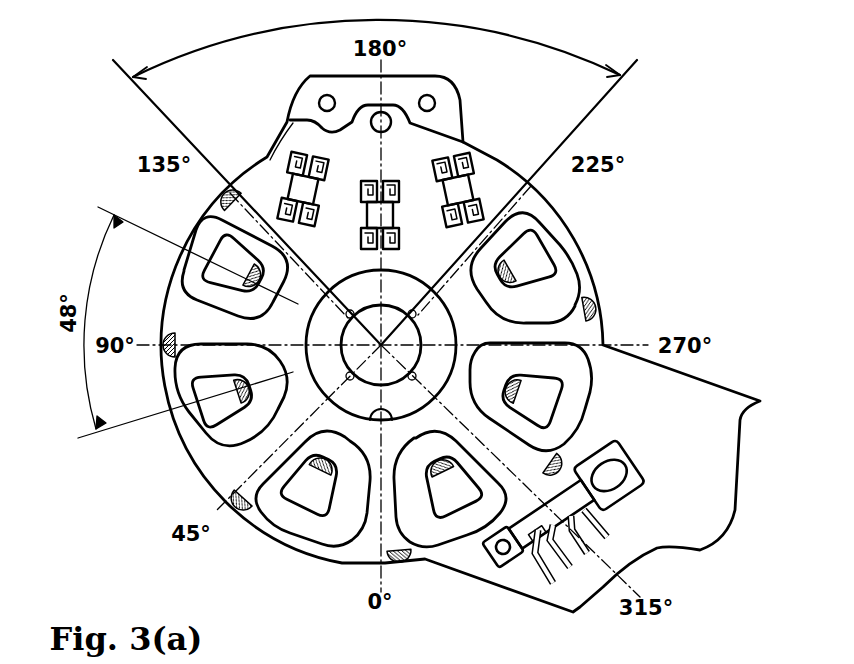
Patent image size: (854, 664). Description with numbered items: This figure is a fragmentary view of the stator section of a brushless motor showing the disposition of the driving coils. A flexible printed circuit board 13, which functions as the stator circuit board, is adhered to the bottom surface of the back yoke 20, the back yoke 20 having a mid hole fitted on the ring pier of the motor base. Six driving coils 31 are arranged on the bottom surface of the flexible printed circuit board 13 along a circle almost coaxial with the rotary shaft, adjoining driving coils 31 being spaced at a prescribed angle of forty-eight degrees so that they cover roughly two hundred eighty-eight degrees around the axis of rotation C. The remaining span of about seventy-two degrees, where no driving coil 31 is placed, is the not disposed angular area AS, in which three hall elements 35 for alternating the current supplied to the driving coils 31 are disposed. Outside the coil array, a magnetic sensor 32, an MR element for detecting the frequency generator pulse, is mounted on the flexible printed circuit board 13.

The flexible printed circuit board 13 is at (703, 530).
The back yoke 20 is at (307, 108).
The driving coils 31 is at (547, 250).
The magnetic sensor 32 is at (528, 543).
The hall elements 35 is at (463, 182).
The axis of rotation C is at (373, 349).
The not disposed angular area AS is at (376, 39).